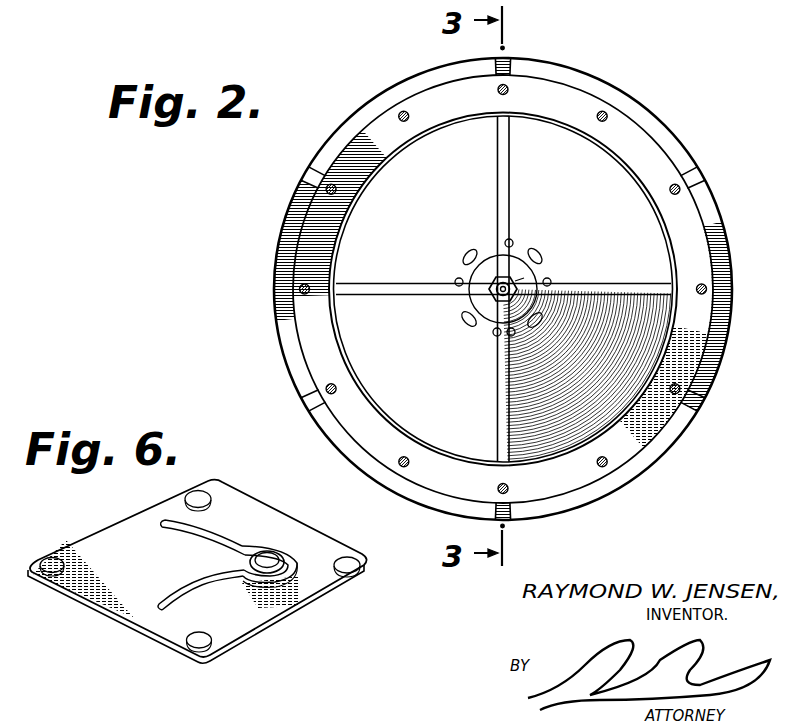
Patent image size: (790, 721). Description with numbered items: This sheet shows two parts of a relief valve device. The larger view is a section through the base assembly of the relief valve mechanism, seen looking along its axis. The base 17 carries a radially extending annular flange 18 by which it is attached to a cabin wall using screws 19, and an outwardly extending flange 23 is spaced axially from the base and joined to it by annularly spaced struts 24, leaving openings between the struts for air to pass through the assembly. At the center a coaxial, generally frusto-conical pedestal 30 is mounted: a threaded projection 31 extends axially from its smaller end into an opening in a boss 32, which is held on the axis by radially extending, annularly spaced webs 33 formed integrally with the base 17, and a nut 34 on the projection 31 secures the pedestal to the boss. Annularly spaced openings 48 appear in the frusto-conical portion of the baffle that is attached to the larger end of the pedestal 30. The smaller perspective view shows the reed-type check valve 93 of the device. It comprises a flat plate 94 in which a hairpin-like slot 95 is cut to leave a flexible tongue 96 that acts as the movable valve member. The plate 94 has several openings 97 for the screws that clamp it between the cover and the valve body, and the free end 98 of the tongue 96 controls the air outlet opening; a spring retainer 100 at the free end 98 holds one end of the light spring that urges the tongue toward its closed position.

In FIG. 2, the base 17 is at (549, 122).
In FIG. 2, the annular flange 18 is at (656, 160).
In FIG. 2, the screws 19 is at (676, 194).
In FIG. 2, the outwardly extending flange 23 is at (716, 228).
In FIG. 2, the struts 24 is at (508, 62).
In FIG. 2, the pedestal 30 is at (488, 326).
In FIG. 2, the threaded projection 31 is at (490, 295).
In FIG. 2, the boss 32 is at (520, 311).
In FIG. 2, the webs 33 is at (497, 181).
In FIG. 2, the nut 34 is at (527, 283).
In FIG. 2, the openings 48 is at (466, 252).
In FIG. 6, the check valve 93 is at (140, 630).
In FIG. 6, the plate 94 is at (236, 507).
In FIG. 6, the hairpin-like slot 95 is at (190, 590).
In FIG. 6, the flexible tongue 96 is at (250, 546).
In FIG. 6, the openings 97 is at (205, 495).
In FIG. 6, the free end 98 is at (290, 556).
In FIG. 6, the spring retainer 100 is at (272, 556).